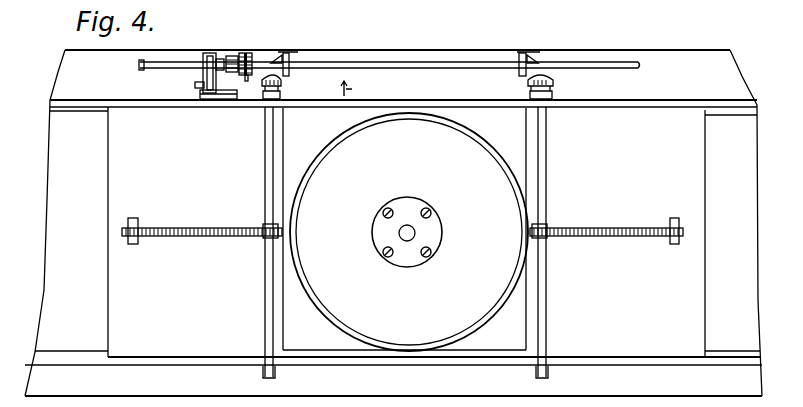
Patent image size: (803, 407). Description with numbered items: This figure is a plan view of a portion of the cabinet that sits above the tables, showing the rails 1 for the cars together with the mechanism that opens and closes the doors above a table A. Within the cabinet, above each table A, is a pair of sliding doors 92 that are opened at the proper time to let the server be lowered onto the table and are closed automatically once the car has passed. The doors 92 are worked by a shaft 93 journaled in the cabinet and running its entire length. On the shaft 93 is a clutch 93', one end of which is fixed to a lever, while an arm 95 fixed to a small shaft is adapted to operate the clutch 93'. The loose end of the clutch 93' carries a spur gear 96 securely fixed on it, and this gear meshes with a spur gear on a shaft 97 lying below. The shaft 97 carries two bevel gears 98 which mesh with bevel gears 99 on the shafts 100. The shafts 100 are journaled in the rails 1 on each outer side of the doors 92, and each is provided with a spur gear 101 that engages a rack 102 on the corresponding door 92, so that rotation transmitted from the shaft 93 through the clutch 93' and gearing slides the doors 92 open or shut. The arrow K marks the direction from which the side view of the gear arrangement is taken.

The rails or tracks 1 is at (641, 106).
The sliding doors 92 is at (406, 156).
The shaft 93 is at (389, 67).
The clutch 93' is at (241, 54).
The arm 95 is at (226, 96).
The spur gear 96 is at (247, 81).
The shaft 97 is at (406, 219).
The bevel gears 98 is at (283, 55).
The bevel gears 99 is at (282, 82).
The shafts 100 is at (265, 173).
The spur gear 101 is at (264, 226).
The racks 102 is at (189, 238).
The table A is at (409, 232).
The arrow K is at (351, 89).